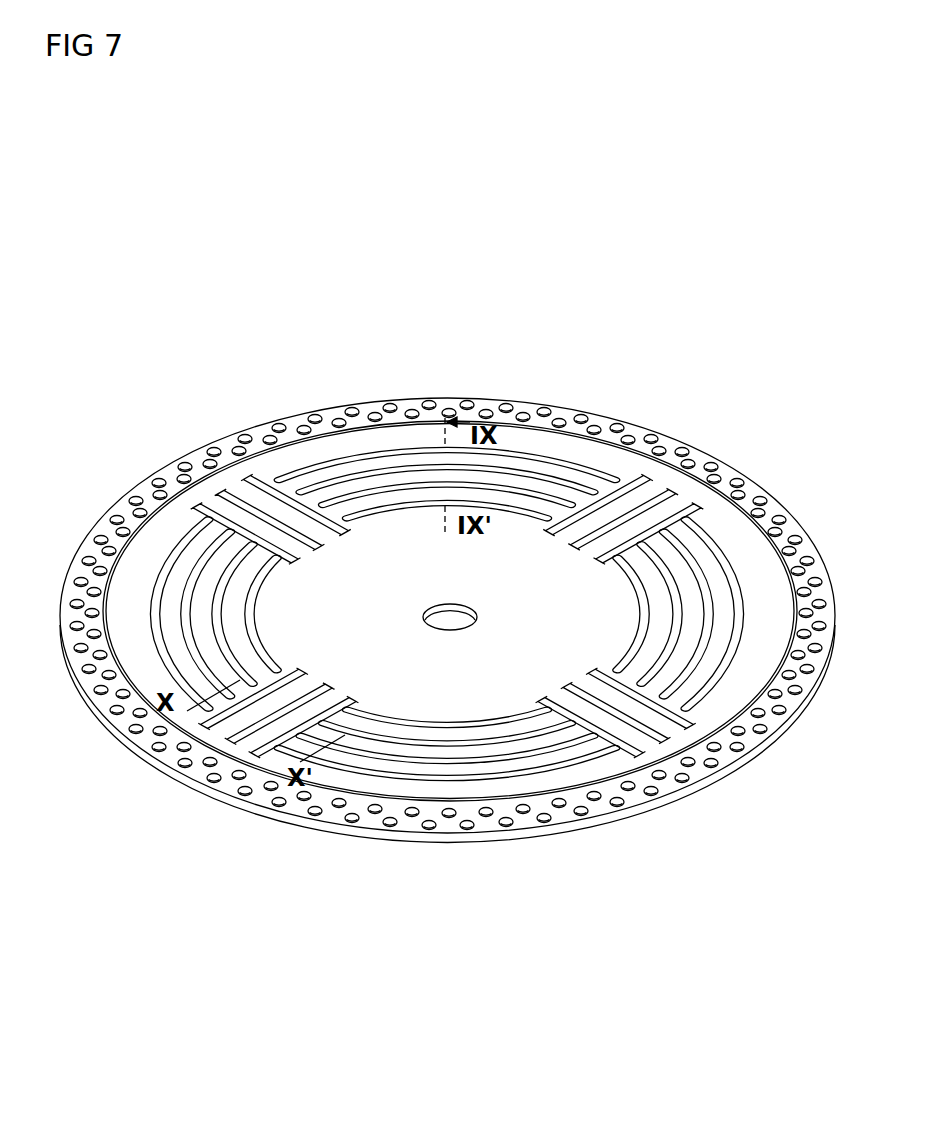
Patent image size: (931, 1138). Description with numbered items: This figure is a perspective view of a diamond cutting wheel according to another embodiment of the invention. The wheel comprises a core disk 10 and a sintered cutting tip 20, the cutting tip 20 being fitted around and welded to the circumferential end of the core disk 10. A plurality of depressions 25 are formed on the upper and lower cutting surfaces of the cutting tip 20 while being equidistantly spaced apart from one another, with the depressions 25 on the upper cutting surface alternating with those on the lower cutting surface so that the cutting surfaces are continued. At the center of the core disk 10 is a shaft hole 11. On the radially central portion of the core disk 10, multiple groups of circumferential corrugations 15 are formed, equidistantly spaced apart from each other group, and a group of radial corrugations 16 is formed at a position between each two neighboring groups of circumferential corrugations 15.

The core disk 10 is at (532, 442).
The shaft hole 11 is at (457, 607).
The circumferential corrugations 15 is at (412, 485).
The radial corrugations 16 is at (200, 720).
The sintered cutting tip 20 is at (243, 424).
The depressions 25 is at (357, 818).